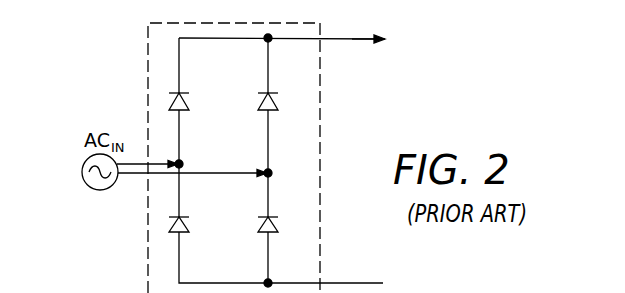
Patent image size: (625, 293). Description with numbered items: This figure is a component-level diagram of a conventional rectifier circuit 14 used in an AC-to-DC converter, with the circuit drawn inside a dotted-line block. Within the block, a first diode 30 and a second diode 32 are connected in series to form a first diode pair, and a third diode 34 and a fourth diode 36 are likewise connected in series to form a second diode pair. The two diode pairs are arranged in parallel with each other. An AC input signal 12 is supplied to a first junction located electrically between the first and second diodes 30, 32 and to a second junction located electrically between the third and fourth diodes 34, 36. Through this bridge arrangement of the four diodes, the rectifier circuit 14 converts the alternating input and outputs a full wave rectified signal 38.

The AC input signal 12 is at (82, 176).
The rectifier circuit 14 is at (148, 59).
The first diode 30 is at (189, 100).
The second diode 32 is at (189, 227).
The third diode 34 is at (278, 102).
The fourth diode 36 is at (278, 228).
The full wave rectified signal 38 is at (355, 37).